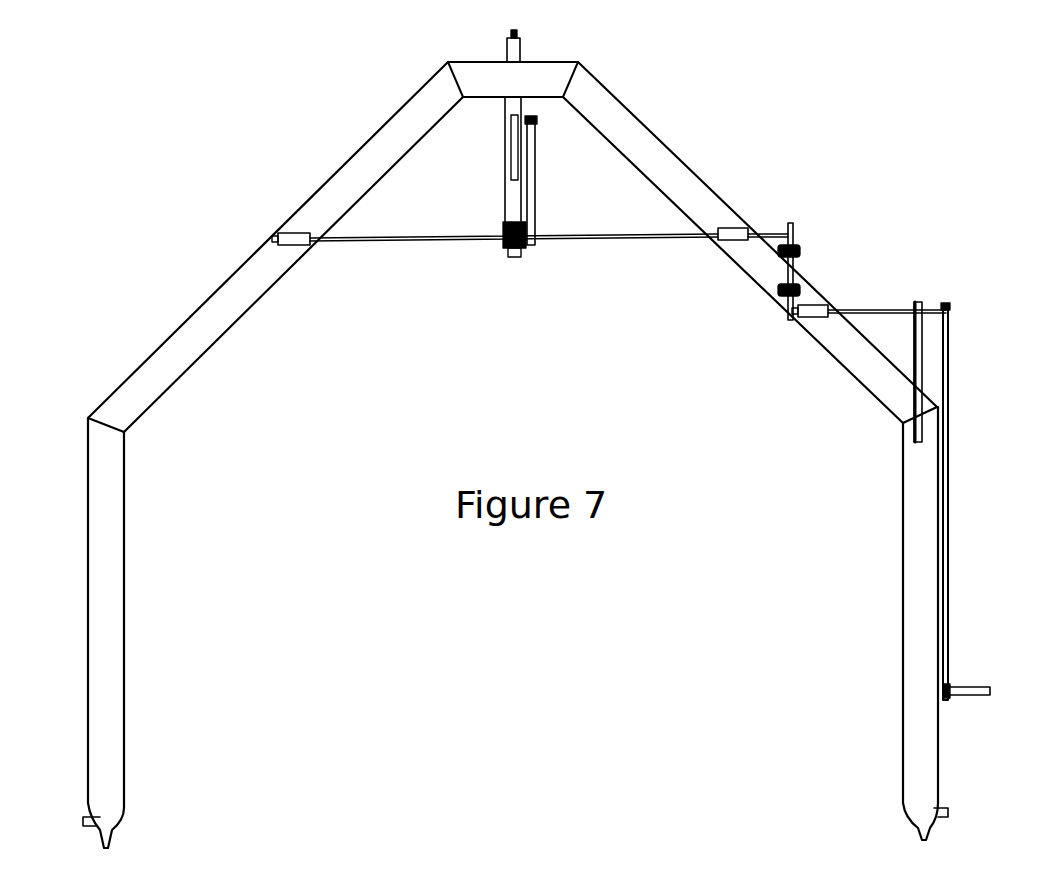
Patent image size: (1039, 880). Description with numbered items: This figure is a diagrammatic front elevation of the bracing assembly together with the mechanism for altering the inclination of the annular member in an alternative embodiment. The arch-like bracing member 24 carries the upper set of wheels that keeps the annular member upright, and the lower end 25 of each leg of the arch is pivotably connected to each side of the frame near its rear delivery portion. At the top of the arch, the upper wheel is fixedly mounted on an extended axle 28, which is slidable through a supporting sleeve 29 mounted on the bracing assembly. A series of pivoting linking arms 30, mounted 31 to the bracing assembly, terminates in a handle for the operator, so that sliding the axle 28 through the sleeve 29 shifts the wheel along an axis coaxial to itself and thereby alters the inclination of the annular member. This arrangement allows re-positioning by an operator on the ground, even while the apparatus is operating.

The arch-like bracing member 24 is at (668, 150).
The lower end of each leg of the arch 25 is at (132, 828).
The extended axle 28 is at (520, 34).
The supporting sleeve 29 is at (506, 106).
The pivoting linking arms 30 is at (812, 257).
The mountings of the linking arms 31 is at (292, 233).